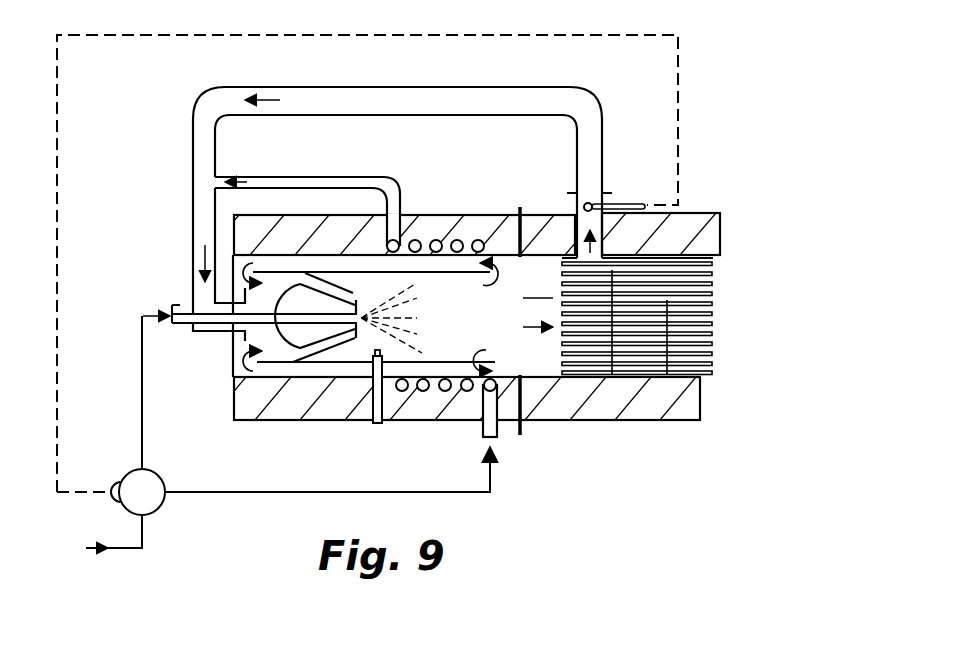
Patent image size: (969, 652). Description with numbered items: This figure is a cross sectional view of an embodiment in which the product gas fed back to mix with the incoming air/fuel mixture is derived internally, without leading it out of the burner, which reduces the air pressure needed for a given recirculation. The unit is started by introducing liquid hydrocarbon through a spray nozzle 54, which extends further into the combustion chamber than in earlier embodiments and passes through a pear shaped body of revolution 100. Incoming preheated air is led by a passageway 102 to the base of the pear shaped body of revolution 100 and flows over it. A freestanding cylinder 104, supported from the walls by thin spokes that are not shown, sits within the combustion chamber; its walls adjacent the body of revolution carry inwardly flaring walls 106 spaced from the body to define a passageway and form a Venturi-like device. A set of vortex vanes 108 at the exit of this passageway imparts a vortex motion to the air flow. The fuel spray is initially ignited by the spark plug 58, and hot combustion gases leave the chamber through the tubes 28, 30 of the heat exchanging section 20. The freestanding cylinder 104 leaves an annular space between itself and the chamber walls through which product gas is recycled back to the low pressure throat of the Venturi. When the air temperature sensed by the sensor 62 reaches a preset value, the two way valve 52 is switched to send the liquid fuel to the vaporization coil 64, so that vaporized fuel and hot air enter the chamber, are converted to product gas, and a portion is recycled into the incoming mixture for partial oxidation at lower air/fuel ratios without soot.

The heat exchanging section 20 is at (690, 211).
The hollow tube 28 is at (618, 375).
The hollow tube 30 is at (658, 355).
The two way valve 52 is at (151, 471).
The spray nozzle 54 is at (183, 305).
The spark plug 58 is at (385, 366).
The sensor 62 is at (593, 203).
The vaporization coil 64 is at (478, 240).
The pear shaped body of revolution 100 is at (293, 353).
The passageway 102 is at (218, 332).
The freestanding cylinder 104 is at (425, 270).
The inwardly flaring walls 106 is at (348, 278).
The vortex vanes 108 is at (360, 356).